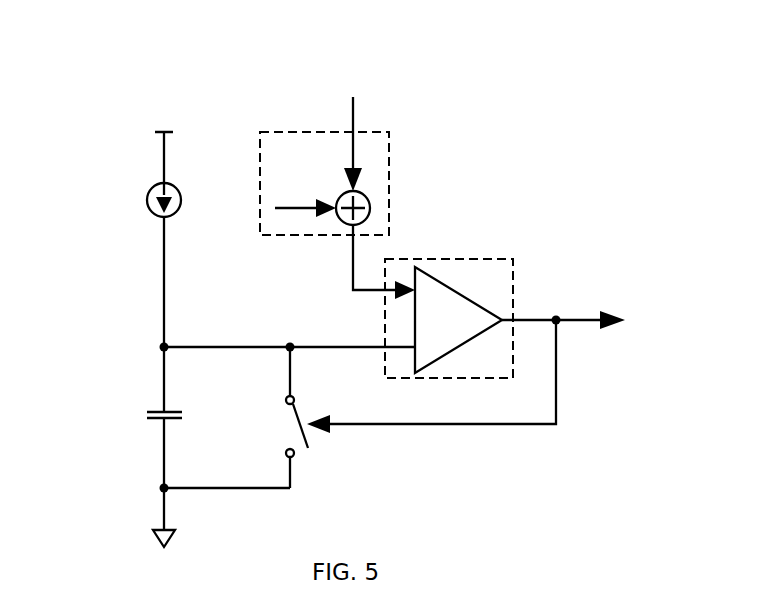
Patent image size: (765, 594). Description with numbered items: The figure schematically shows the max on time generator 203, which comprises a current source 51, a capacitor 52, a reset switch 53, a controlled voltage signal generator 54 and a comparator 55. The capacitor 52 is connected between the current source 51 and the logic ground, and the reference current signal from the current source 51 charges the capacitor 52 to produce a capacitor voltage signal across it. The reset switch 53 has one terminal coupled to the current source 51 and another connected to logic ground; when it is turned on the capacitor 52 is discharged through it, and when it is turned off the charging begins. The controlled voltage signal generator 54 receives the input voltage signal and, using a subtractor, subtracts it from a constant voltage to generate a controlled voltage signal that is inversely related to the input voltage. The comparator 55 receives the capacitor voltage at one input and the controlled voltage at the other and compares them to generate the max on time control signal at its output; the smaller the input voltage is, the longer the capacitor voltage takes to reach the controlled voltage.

The max on time generator 203 is at (540, 91).
The current source 51 is at (153, 212).
The capacitor 52 is at (190, 416).
The reset switch 53 is at (307, 421).
The controlled voltage signal generator 54 is at (389, 169).
The comparator 55 is at (513, 279).